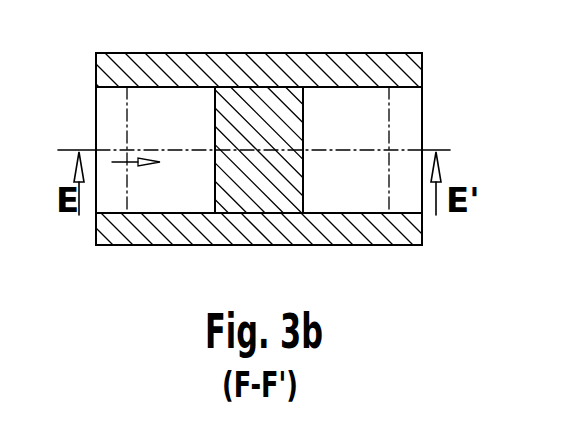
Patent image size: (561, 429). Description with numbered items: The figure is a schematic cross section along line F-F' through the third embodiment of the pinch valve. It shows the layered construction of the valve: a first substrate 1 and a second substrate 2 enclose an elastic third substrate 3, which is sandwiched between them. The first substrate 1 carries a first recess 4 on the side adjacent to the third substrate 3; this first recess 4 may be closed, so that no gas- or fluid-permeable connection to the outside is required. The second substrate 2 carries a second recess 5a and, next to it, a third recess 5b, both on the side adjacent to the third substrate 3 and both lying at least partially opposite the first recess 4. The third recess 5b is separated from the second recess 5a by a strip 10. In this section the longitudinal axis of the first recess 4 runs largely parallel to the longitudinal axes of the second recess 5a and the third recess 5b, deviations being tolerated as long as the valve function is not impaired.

The first substrate 1 is at (357, 110).
The second substrate 2 is at (263, 193).
The third substrate 3 is at (370, 116).
The first recess 4 is at (175, 110).
The second recess 5a is at (173, 190).
The third recess 5b is at (356, 190).
The strip 10 is at (262, 94).